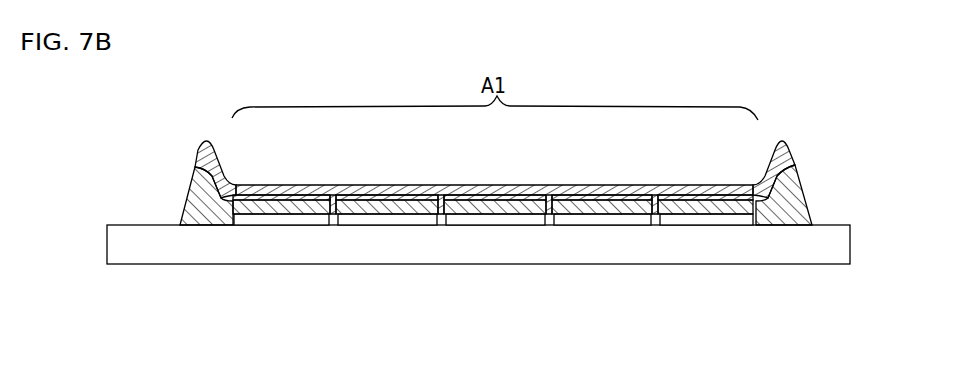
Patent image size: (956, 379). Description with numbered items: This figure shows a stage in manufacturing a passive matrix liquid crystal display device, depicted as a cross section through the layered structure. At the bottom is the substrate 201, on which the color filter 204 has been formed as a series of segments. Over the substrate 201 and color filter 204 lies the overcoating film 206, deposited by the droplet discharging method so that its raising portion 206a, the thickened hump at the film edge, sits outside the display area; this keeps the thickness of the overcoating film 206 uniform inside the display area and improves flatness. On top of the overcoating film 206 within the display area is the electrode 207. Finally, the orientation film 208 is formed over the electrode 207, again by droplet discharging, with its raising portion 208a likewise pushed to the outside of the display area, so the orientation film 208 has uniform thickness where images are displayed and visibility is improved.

The substrate 201 is at (832, 257).
The color filter 204 is at (386, 231).
The overcoating film 206 is at (446, 199).
The raising portion 206a is at (190, 201).
The electrode 207 is at (494, 197).
The orientation film 208 is at (556, 186).
The raising portion 208a is at (205, 158).